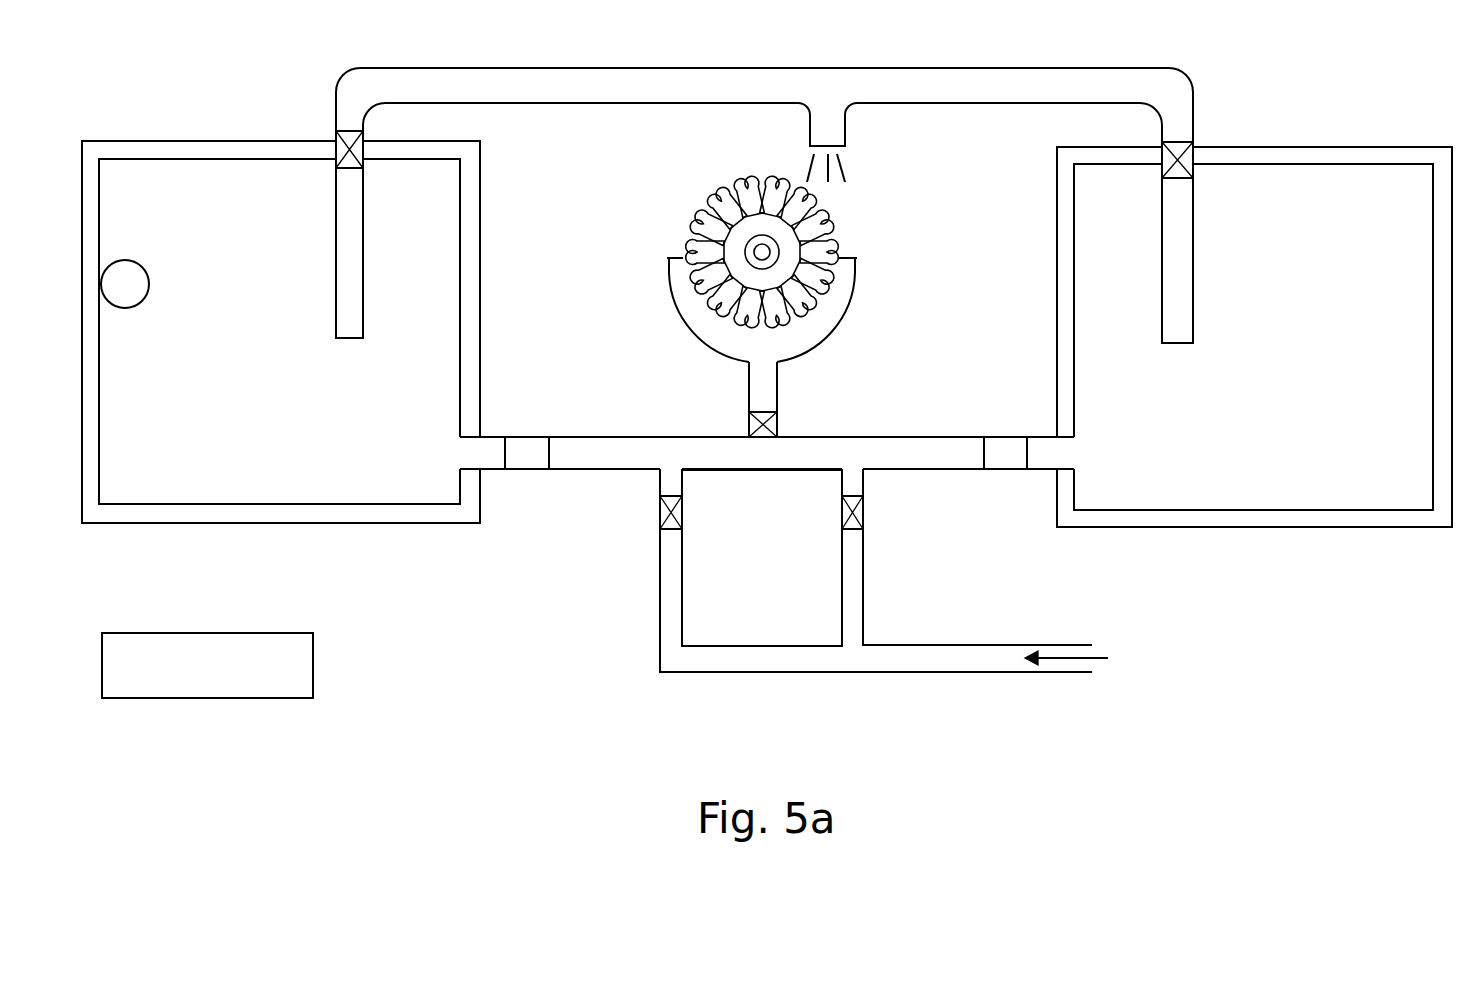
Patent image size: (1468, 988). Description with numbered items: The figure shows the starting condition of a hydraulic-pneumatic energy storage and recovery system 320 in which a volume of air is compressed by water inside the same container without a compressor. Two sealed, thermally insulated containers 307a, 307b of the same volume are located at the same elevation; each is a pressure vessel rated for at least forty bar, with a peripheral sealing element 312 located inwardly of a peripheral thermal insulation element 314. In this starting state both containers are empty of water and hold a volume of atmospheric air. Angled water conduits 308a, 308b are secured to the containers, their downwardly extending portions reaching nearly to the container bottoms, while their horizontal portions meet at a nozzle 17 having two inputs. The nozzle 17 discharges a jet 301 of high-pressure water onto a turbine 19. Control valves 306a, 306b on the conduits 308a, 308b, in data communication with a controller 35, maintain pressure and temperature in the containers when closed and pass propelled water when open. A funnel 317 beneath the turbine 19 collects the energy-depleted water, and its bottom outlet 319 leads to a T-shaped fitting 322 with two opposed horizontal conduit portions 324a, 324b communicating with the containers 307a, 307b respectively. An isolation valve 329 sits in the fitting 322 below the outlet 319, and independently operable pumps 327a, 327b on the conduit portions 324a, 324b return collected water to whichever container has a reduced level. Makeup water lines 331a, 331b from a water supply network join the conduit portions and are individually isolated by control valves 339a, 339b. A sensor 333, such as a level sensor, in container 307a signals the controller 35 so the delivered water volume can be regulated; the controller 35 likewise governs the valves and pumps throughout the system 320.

The nozzle 17 is at (828, 130).
The turbine 19 is at (742, 242).
The controller 35 is at (255, 652).
The jet 301 is at (845, 165).
The control valve 306a is at (335, 140).
The control valve 306b is at (1180, 143).
The container 307a is at (158, 173).
The container 307b is at (1377, 187).
The angled water conduit 308a is at (345, 242).
The angled water conduit 308b is at (1179, 265).
The peripheral sealing element 312 is at (98, 472).
The peripheral thermal insulation element 314 is at (92, 440).
The funnel 317 is at (710, 322).
The bottom outlet 319 is at (760, 411).
The hydraulic-pneumatic energy storage and recovery system 320 is at (1283, 95).
The T-shaped fitting 322 is at (765, 457).
The conduit portion 324a is at (617, 455).
The conduit portion 324b is at (925, 453).
The pump 327a is at (523, 469).
The pump 327b is at (1005, 469).
The isolation valve 329 is at (753, 423).
The makeup water line 331a is at (673, 575).
The makeup water line 331b is at (850, 575).
The sensor 333 is at (144, 284).
The control valve 339a is at (663, 513).
The control valve 339b is at (862, 513).